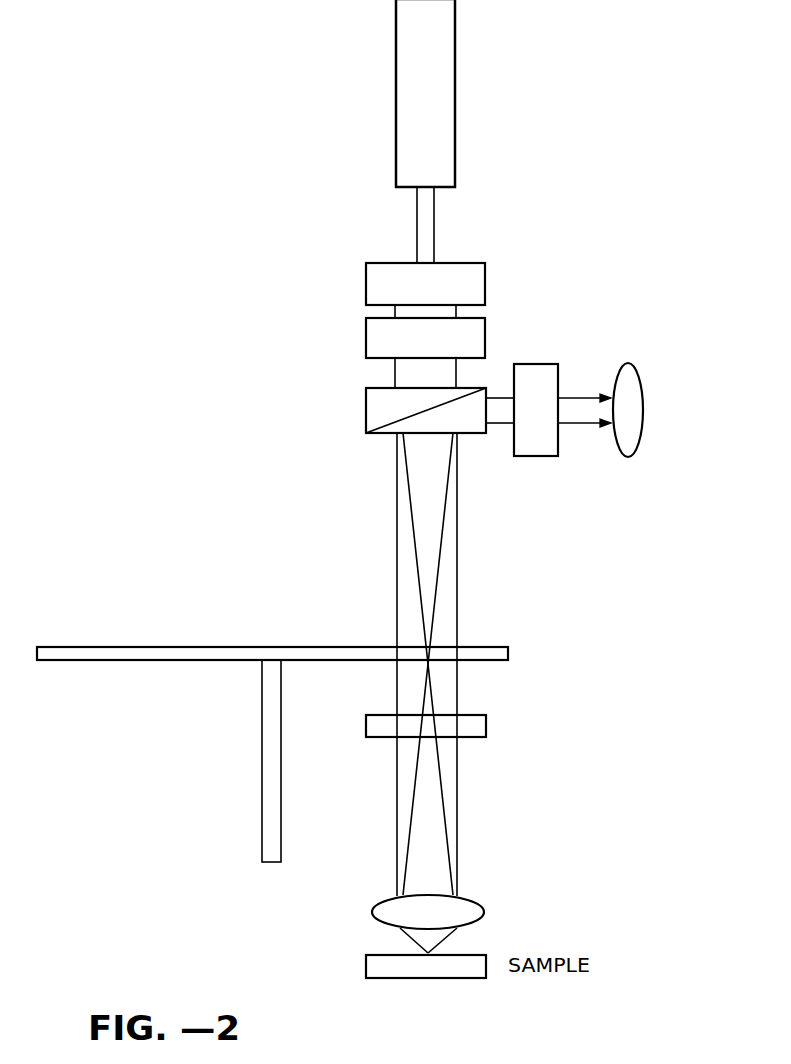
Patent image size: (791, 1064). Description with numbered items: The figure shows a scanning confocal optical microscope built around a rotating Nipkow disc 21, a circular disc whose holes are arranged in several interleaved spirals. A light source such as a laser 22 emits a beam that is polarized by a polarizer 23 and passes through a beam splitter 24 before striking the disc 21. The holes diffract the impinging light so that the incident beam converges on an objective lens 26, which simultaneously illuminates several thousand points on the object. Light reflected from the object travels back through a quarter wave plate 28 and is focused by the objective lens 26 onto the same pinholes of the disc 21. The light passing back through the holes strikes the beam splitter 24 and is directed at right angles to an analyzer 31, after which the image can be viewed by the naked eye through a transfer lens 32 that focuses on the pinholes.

The circular disc 21 is at (105, 653).
The laser 22 is at (455, 157).
The polarizer 23 is at (485, 336).
The beam splitter 24 is at (373, 415).
The objective lens 26 is at (476, 897).
The quarter wave plate 28 is at (486, 716).
The analyzer 31 is at (545, 370).
The transfer lens 32 is at (640, 368).